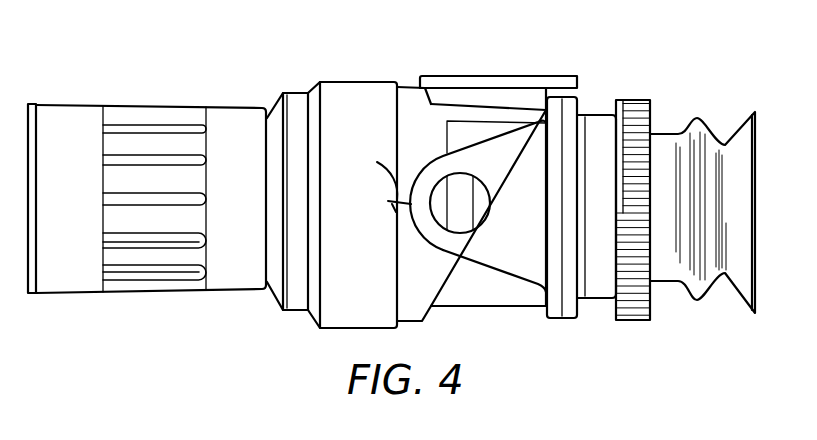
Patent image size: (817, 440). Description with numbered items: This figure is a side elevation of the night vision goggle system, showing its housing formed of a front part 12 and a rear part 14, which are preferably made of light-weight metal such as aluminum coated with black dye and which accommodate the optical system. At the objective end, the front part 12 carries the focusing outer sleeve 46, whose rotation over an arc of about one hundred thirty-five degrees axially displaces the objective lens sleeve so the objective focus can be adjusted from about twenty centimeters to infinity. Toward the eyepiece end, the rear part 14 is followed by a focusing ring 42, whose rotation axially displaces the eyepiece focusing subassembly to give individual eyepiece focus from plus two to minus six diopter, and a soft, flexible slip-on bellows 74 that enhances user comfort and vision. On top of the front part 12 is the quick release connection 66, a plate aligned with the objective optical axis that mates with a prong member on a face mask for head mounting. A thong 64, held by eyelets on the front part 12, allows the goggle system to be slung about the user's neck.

The front part of the housing 12 is at (322, 329).
The rear part of the housing 14 is at (572, 318).
The focusing ring 42 is at (630, 102).
The focusing outer sleeve 46 is at (170, 297).
The thong 64 is at (390, 160).
The quick release connection 66 is at (450, 75).
The bellows 74 is at (738, 293).